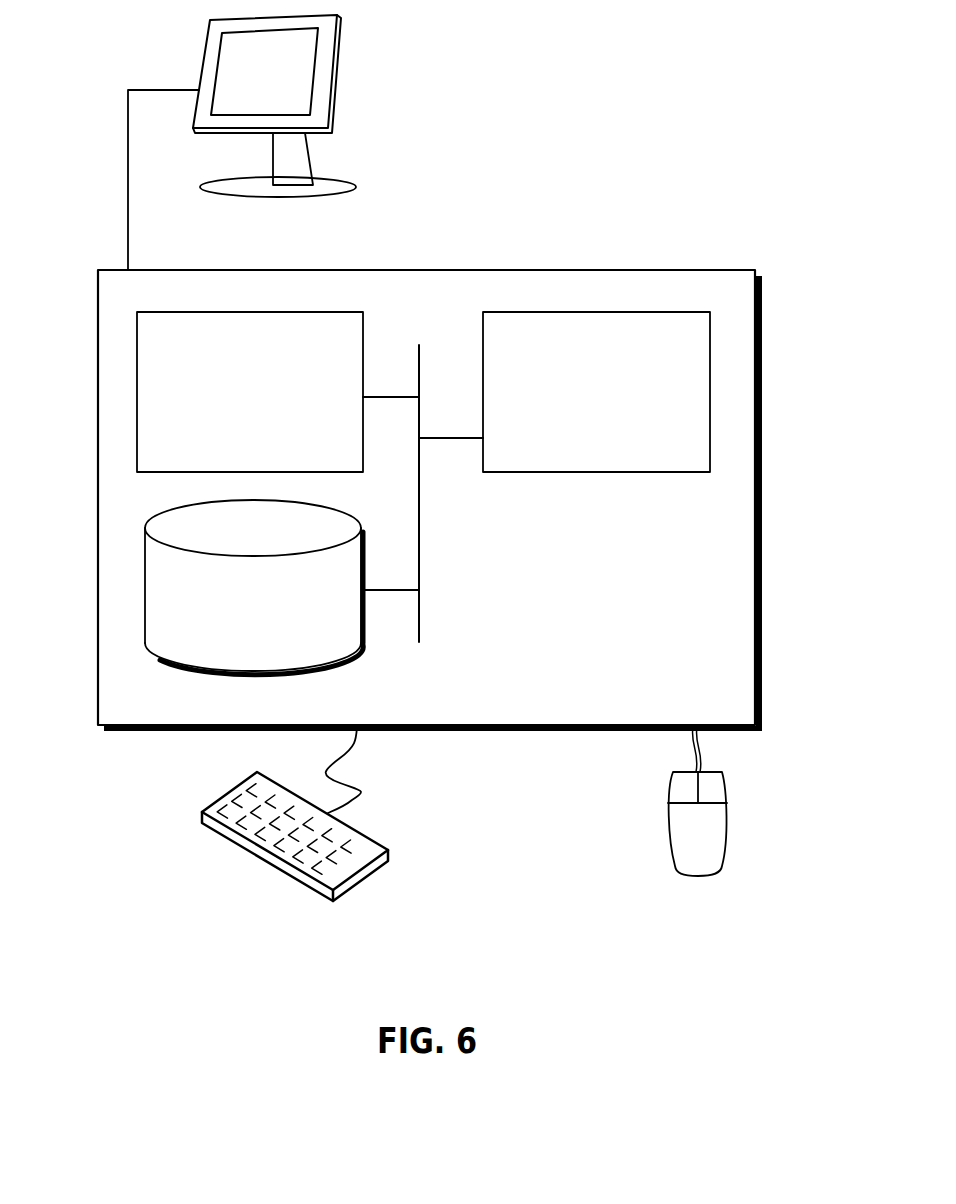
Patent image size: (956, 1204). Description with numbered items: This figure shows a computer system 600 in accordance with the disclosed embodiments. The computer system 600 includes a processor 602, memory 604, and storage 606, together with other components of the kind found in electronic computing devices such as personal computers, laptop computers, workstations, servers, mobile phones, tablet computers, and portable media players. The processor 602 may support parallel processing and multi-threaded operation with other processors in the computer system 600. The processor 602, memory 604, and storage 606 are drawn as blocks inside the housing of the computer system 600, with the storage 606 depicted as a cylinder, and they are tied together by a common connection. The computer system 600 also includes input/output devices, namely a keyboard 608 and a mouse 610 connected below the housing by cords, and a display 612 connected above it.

The computer system 600 is at (473, 248).
The processor 602 is at (622, 404).
The memory 604 is at (272, 404).
The storage 606 is at (280, 616).
The keyboard 608 is at (220, 837).
The mouse 610 is at (718, 846).
The display 612 is at (242, 142).